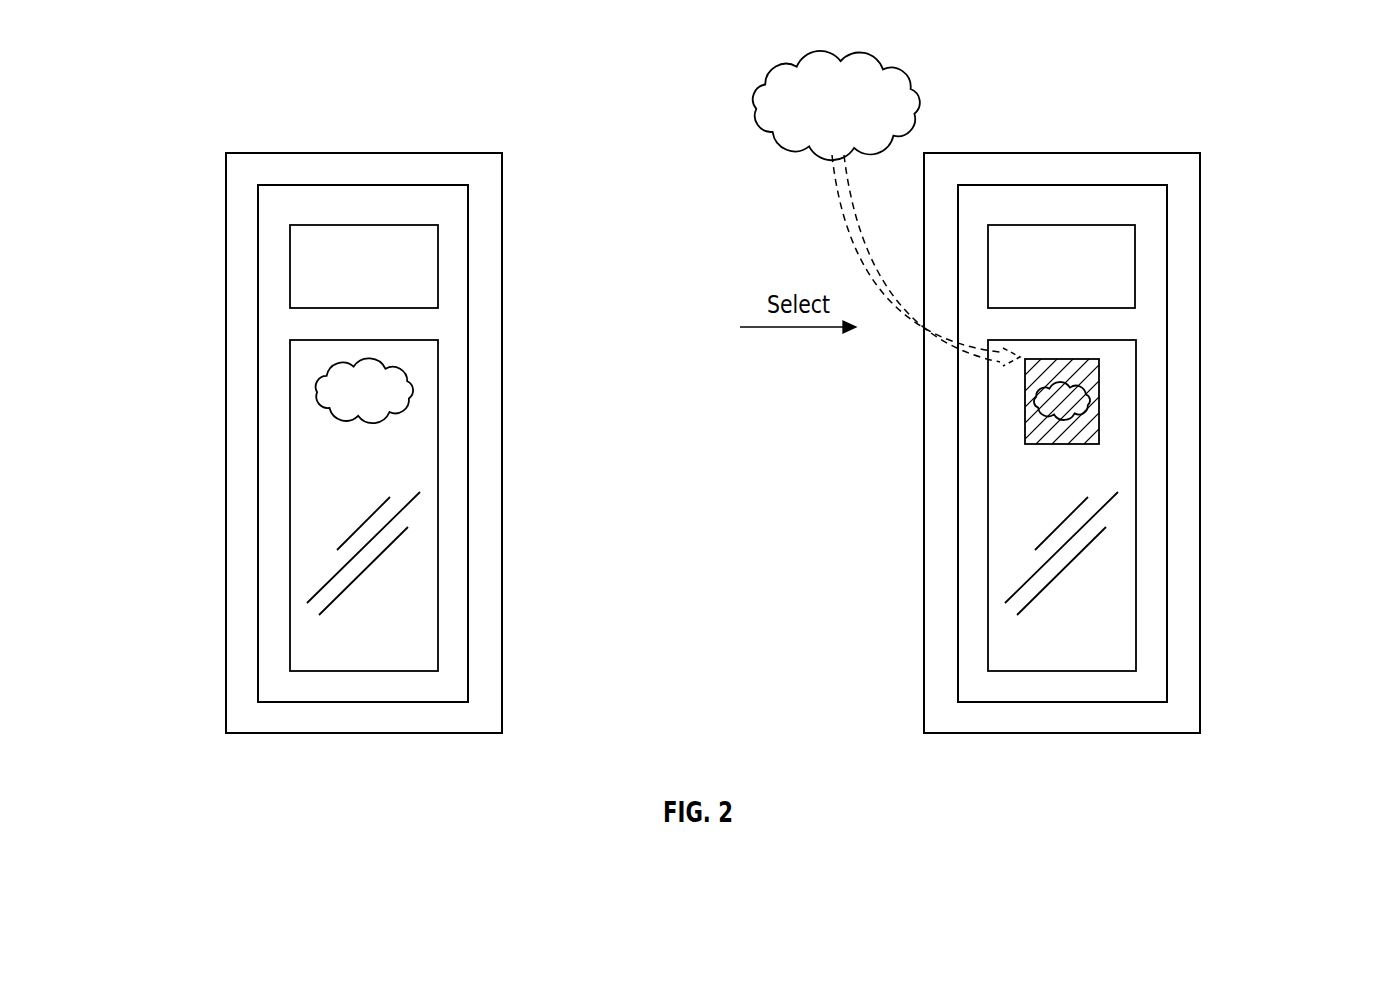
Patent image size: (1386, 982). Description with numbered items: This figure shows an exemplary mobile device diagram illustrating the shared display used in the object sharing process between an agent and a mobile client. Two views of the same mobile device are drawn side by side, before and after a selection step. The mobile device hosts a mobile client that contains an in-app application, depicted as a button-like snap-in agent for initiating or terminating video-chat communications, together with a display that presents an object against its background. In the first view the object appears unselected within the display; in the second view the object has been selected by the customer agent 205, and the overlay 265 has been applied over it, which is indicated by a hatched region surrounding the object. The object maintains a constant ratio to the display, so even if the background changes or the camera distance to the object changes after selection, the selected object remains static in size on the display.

The customer agent 205 is at (880, 66).
The overlay 265 is at (1025, 434).